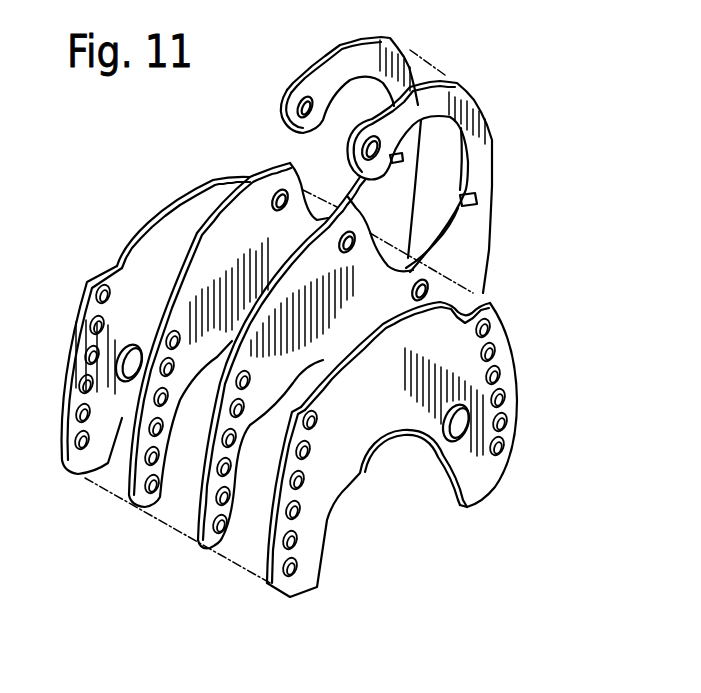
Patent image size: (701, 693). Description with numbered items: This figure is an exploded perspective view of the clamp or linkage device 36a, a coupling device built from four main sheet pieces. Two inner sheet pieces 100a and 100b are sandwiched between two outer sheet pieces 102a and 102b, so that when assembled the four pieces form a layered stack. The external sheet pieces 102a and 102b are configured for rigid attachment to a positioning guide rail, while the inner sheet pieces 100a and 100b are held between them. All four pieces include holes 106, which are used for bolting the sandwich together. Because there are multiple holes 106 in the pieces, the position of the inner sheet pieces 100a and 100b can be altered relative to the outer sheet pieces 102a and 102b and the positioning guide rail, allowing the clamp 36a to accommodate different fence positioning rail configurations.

The clamp or linkage device 36a is at (156, 192).
The sheet piece 100a is at (250, 205).
The sheet piece 100b is at (547, 241).
The sheet piece 102a is at (128, 282).
The sheet piece 102b is at (380, 423).
The holes 106 is at (80, 450).